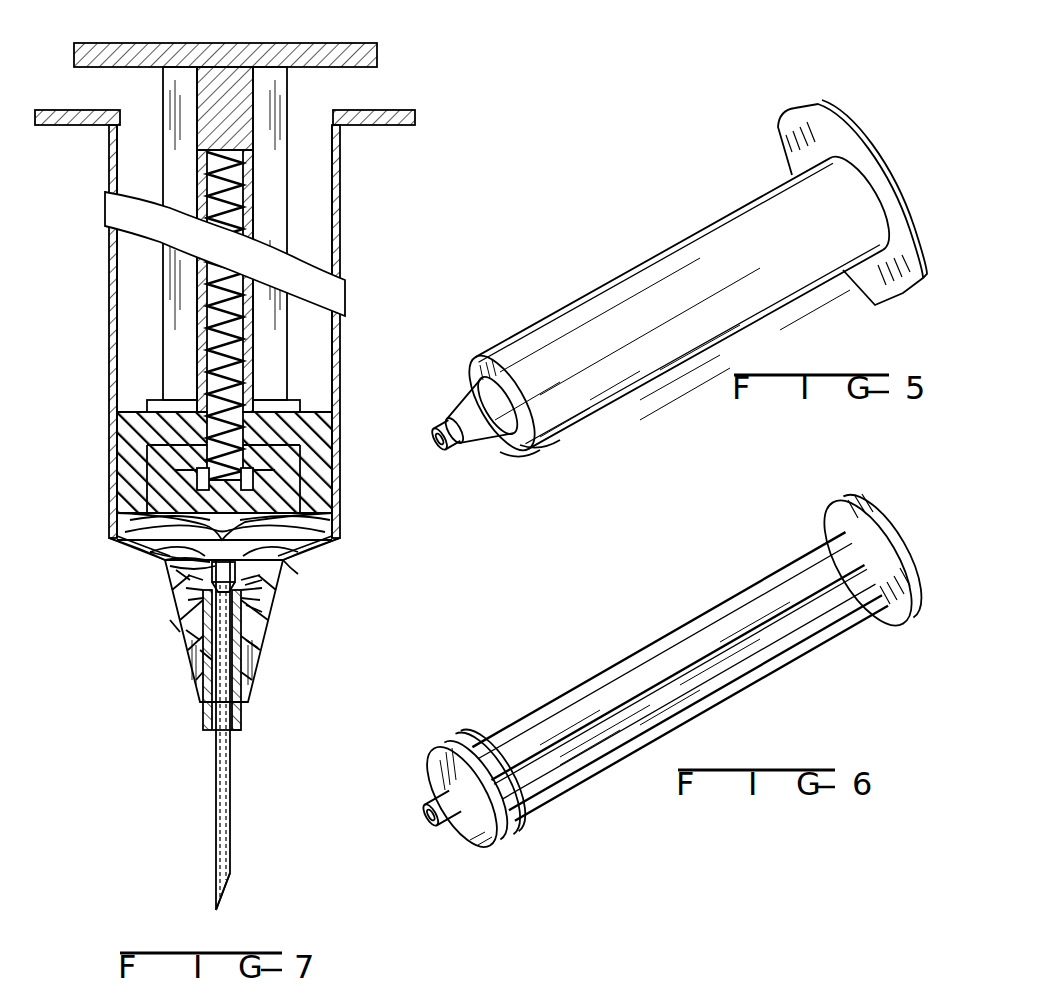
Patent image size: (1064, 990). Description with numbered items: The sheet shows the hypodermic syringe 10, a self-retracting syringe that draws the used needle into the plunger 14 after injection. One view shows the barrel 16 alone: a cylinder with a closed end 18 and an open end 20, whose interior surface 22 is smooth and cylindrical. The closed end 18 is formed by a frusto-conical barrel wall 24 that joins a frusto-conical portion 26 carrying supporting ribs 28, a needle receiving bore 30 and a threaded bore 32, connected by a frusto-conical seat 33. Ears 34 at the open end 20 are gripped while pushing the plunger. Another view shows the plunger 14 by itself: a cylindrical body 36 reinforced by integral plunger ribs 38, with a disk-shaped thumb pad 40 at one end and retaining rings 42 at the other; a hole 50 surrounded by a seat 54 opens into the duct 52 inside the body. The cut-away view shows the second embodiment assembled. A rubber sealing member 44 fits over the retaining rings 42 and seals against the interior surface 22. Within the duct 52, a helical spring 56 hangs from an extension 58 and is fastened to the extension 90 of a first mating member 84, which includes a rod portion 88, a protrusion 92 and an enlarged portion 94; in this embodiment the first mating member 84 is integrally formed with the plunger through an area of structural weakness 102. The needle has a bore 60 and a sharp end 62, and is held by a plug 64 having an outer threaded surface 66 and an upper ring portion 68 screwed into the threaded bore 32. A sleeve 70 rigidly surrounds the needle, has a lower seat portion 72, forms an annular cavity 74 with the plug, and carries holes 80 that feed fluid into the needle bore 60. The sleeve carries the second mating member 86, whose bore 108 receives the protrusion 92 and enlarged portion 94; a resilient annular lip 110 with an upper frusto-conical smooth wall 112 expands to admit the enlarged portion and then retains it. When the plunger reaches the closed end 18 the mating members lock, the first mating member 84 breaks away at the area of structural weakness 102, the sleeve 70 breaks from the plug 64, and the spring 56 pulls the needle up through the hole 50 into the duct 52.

In FIG. 7, the hypodermic syringe 10 is at (205, 731).
In FIG. 7, the plunger 14 is at (230, 260).
In FIG. 6, the plunger 14 is at (649, 678).
In FIG. 7, the barrel 16 is at (243, 288).
In FIG. 5, the barrel 16 is at (680, 247).
In FIG. 7, the closed end 18 is at (205, 641).
In FIG. 5, the closed end 18 is at (473, 421).
In FIG. 7, the open end 20 is at (243, 70).
In FIG. 5, the open end 20 is at (846, 197).
In FIG. 7, the interior surface 22 is at (120, 332).
In FIG. 7, the barrel wall 24 is at (120, 548).
In FIG. 5, the barrel wall 24 is at (484, 376).
In FIG. 7, the frusto-conical portion 26 is at (272, 645).
In FIG. 5, the frusto-conical portion 26 is at (490, 444).
In FIG. 7, the supporting ribs 28 is at (246, 685).
In FIG. 5, the supporting ribs 28 is at (433, 447).
In FIG. 7, the needle receiving bore 30 is at (214, 742).
In FIG. 5, the needle receiving bore 30 is at (438, 448).
In FIG. 7, the threaded bore 32 is at (240, 570).
In FIG. 7, the seat 33 is at (205, 656).
In FIG. 7, the ears 34 is at (76, 110).
In FIG. 5, the ears 34 is at (800, 128).
In FIG. 6, the cylindrical body 36 is at (748, 656).
In FIG. 7, the plunger ribs 38 is at (168, 146).
In FIG. 6, the plunger ribs 38 is at (758, 580).
In FIG. 7, the thumb pad 40 is at (232, 44).
In FIG. 6, the thumb pad 40 is at (904, 540).
In FIG. 7, the retaining rings 42 is at (127, 400).
In FIG. 6, the retaining rings 42 is at (500, 840).
In FIG. 7, the rubber sealing member 44 is at (252, 462).
In FIG. 6, the plunger hole 50 is at (409, 824).
In FIG. 7, the duct 52 is at (223, 315).
In FIG. 6, the seat 54 is at (437, 817).
In FIG. 7, the helical spring 56 is at (238, 210).
In FIG. 7, the extension 58 is at (203, 172).
In FIG. 7, the bore 60 is at (223, 735).
In FIG. 7, the sharp end 62 is at (228, 880).
In FIG. 7, the plug 64 is at (195, 590).
In FIG. 7, the outer threaded surface 66 is at (168, 630).
In FIG. 7, the upper ring portion 68 is at (255, 590).
In FIG. 7, the sleeve 70 is at (256, 612).
In FIG. 7, the lower seat portion 72 is at (256, 650).
In FIG. 7, the annular cavity 74 is at (190, 640).
In FIG. 7, the holes 80 is at (180, 580).
In FIG. 7, the first mating member 84 is at (224, 535).
In FIG. 7, the second mating member 86 is at (300, 574).
In FIG. 7, the rod portion 88 is at (189, 469).
In FIG. 7, the extension 90 is at (241, 466).
In FIG. 7, the protrusion 92 is at (340, 538).
In FIG. 7, the enlarged portion 94 is at (200, 560).
In FIG. 7, the area of structural weakness 102 is at (170, 520).
In FIG. 7, the bore 108 is at (210, 562).
In FIG. 7, the annular lip 110 is at (215, 566).
In FIG. 7, the upper frusto-conical smooth wall 112 is at (335, 552).